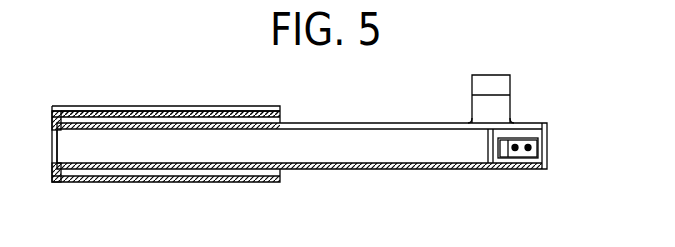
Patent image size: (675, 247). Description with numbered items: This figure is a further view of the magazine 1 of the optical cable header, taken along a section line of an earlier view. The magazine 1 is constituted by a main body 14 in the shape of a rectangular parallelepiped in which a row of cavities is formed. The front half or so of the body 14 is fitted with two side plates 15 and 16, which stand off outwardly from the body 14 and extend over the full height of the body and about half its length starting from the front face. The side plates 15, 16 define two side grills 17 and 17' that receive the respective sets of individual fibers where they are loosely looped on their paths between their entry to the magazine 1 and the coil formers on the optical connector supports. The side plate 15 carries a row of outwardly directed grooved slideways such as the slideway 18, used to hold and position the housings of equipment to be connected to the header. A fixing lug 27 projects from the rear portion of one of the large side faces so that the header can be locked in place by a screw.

The magazine 1 is at (398, 122).
The main body 14 is at (407, 168).
The side plate 15 is at (260, 113).
The side plate 16 is at (260, 178).
The side grill 17 is at (170, 91).
The side grill 17' is at (170, 197).
The grooved slideway 18 is at (145, 108).
The fixing lug 27 is at (513, 90).